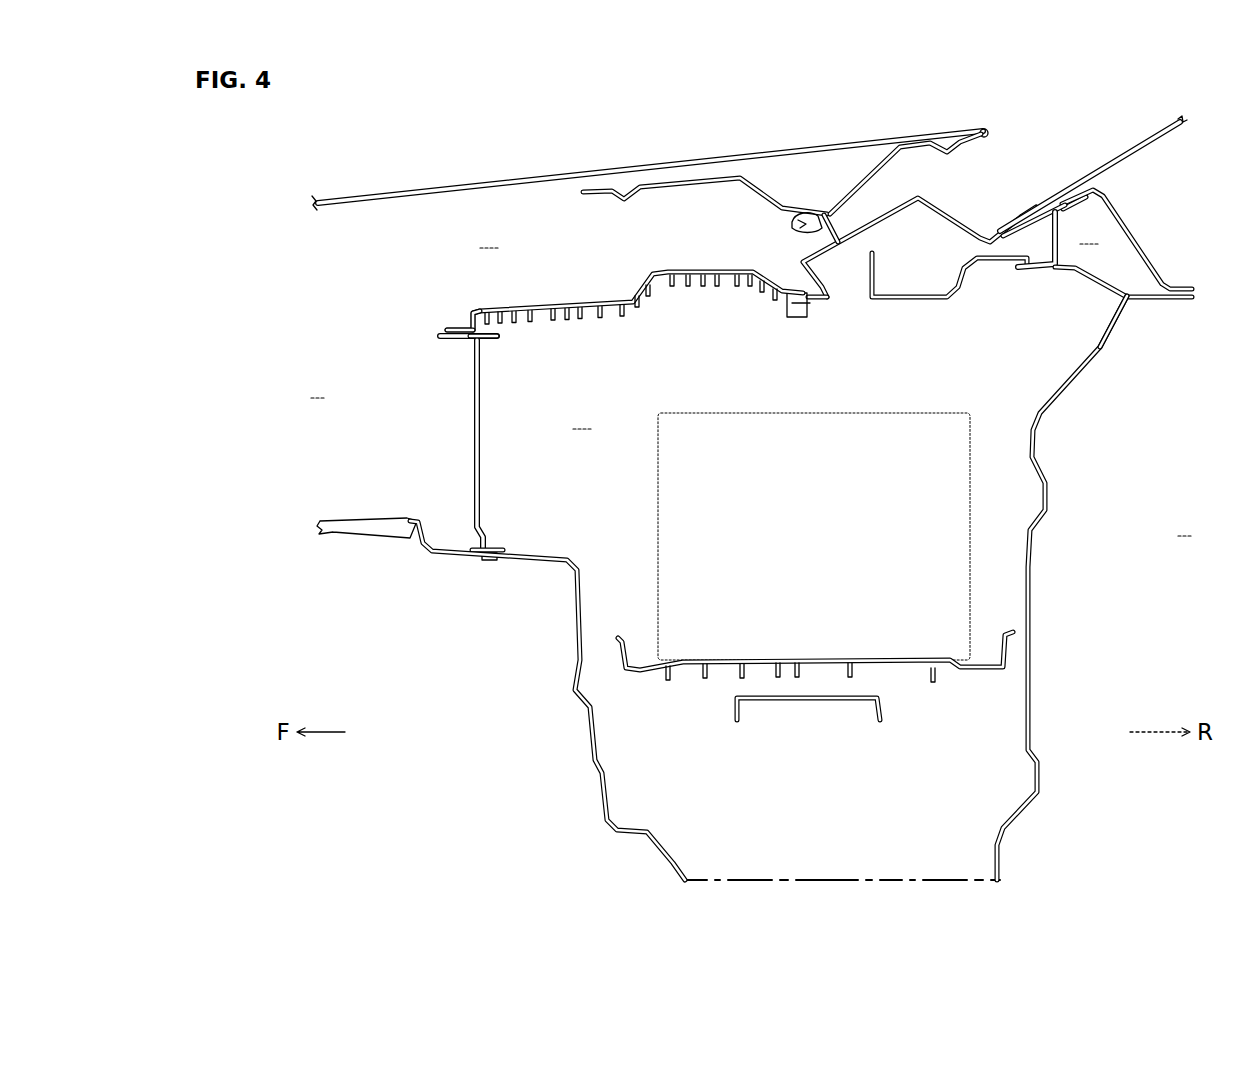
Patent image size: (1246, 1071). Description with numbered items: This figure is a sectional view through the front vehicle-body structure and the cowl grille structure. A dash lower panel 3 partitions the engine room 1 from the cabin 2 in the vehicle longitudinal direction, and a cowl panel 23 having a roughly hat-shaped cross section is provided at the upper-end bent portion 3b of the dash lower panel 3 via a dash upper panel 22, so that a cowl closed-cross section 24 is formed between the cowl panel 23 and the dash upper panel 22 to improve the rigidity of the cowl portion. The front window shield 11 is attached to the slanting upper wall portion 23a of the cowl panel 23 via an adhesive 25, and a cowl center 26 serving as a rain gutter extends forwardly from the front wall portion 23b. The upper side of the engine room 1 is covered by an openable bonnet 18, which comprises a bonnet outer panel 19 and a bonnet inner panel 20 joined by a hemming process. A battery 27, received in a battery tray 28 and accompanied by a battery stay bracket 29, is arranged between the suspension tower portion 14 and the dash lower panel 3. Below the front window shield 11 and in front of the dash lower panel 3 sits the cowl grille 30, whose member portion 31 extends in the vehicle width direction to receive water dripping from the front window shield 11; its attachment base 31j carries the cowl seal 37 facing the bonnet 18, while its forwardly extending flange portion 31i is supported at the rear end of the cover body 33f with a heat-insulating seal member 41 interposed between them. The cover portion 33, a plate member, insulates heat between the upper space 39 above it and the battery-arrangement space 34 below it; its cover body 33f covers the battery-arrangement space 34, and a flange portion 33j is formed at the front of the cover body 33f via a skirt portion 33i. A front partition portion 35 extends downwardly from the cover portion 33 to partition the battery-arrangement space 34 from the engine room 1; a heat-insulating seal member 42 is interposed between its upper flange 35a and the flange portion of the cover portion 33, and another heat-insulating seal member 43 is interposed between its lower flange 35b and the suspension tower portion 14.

The engine room 1 is at (318, 387).
The cabin 2 is at (1185, 525).
The dash lower panel 3 is at (1035, 553).
The upper-end bent portion 3b is at (1118, 300).
The front window shield 11 is at (1121, 160).
The suspension tower portion 14 is at (559, 547).
The bonnet 18 is at (413, 178).
The bonnet outer panel 19 is at (472, 176).
The bonnet inner panel 20 is at (672, 186).
The dash upper panel 22 is at (1105, 266).
The cowl panel 23 is at (1110, 200).
The upper wall portion 23a is at (1050, 209).
The front wall portion 23b is at (1068, 268).
The cowl closed-cross section 24 is at (1089, 233).
The adhesive 25 is at (1070, 200).
The cowl center 26 is at (908, 302).
The battery 27 is at (695, 412).
The battery tray 28 is at (905, 668).
The battery stay bracket 29 is at (735, 710).
The cowl grille 30 is at (926, 190).
The member portion 31 is at (952, 200).
The flange portion 31i is at (815, 303).
The attachment base 31j is at (806, 232).
The cover portion 33 is at (715, 258).
The cover body 33f is at (590, 300).
The skirt portion 33i is at (470, 312).
The flange portion 33j is at (442, 329).
The battery-arrangement space 34 is at (582, 418).
The front partition portion 35 is at (459, 440).
The upper flange 35a is at (490, 340).
The lower flange 35b is at (495, 546).
The cowl seal 37 is at (830, 215).
The upper space 39 is at (489, 237).
The heat-insulating seal member 41 is at (803, 318).
The heat-insulating seal member 42 is at (468, 337).
The heat-insulating seal member 43 is at (488, 557).